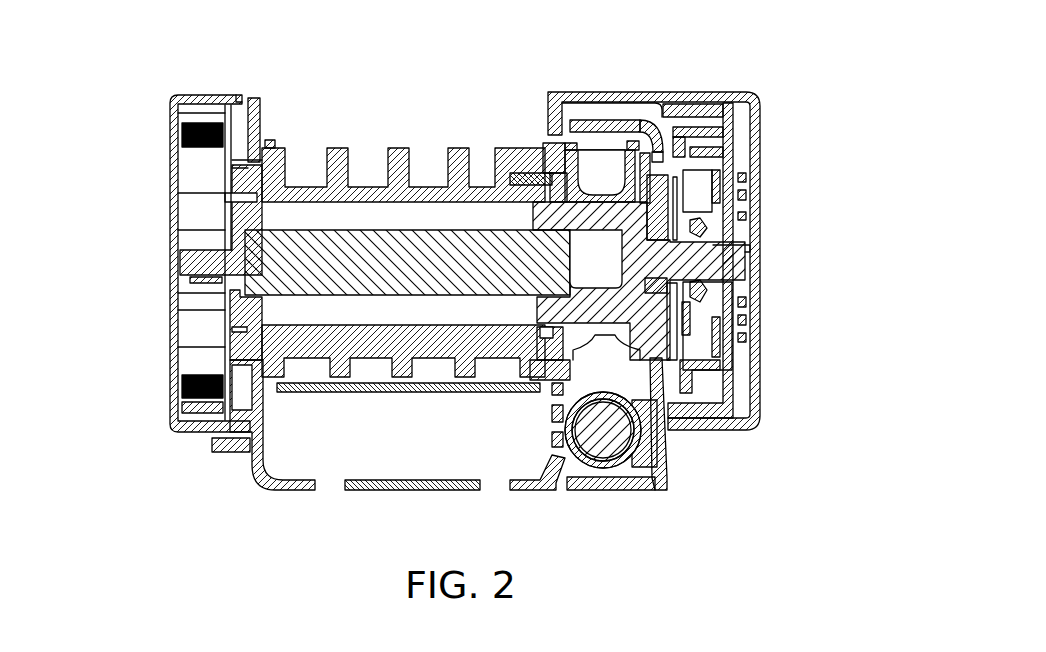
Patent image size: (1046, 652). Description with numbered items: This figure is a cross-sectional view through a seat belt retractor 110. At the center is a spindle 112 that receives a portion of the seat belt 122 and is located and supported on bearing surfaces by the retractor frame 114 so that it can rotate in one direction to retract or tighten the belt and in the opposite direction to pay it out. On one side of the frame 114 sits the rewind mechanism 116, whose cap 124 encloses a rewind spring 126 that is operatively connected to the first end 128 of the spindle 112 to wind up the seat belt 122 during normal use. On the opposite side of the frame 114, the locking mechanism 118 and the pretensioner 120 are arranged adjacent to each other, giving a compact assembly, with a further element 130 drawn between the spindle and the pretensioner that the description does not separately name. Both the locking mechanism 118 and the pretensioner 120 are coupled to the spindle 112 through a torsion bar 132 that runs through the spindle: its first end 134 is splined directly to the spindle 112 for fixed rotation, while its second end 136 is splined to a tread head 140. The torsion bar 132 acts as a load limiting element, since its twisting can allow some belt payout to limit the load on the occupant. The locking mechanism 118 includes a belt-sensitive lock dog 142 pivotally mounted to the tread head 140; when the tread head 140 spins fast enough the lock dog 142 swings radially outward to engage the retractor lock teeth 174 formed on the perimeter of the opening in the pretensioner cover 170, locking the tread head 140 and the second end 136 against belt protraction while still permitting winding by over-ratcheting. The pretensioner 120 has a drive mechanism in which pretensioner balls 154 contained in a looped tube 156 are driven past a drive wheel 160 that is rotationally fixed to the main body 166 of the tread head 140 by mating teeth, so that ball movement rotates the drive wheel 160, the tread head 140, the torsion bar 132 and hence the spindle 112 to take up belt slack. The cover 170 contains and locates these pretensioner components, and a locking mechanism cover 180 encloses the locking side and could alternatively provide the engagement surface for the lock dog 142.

The retractor 110 is at (459, 289).
The spindle 112 is at (432, 188).
The retractor frame 114 is at (262, 478).
The rewind mechanism 116 is at (160, 175).
The locking mechanism 118 is at (742, 165).
The pretensioner 120 is at (652, 105).
The seat belt 122 is at (335, 390).
The cap 124 is at (172, 323).
The rewind spring 126 is at (182, 373).
The first end of the spindle 128 is at (267, 148).
The bearing cup 130 is at (535, 155).
The torsion bar 132 is at (440, 257).
The first end of the torsion bar 134 is at (238, 237).
The second end of the torsion bar 136 is at (533, 255).
The tread head 140 is at (660, 262).
The lock dog 142 is at (672, 215).
The pretensioner balls 154 is at (582, 458).
The tube 156 is at (605, 462).
The drive wheel 160 is at (667, 415).
The main body of the tread head 166 is at (695, 372).
The cover 170 is at (660, 470).
The retractor lock teeth 174 is at (700, 145).
The locking mechanism cover 180 is at (752, 95).